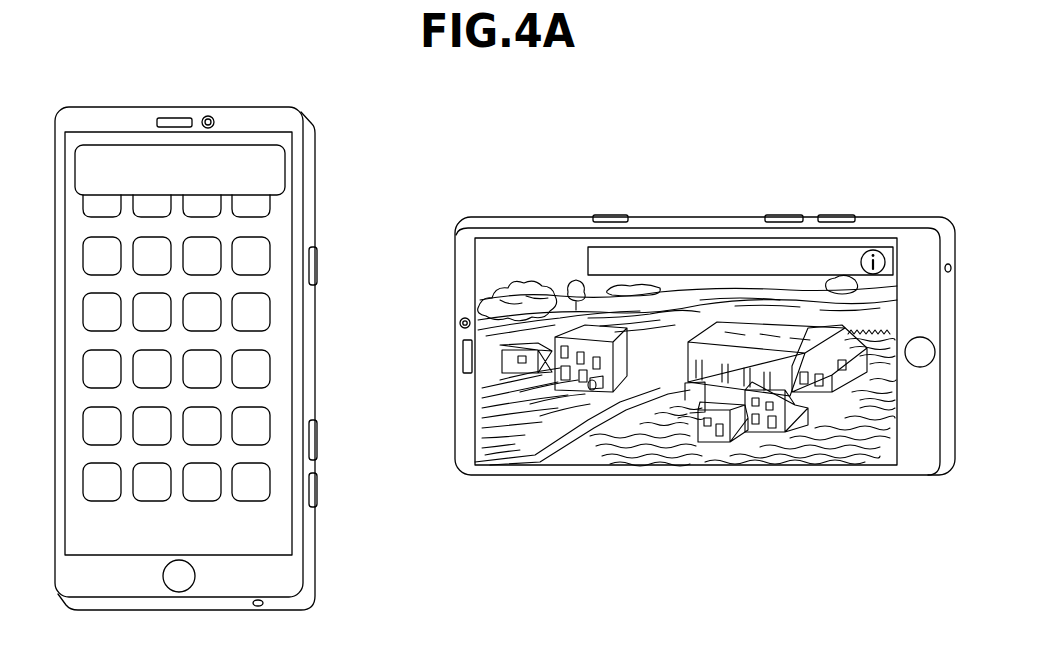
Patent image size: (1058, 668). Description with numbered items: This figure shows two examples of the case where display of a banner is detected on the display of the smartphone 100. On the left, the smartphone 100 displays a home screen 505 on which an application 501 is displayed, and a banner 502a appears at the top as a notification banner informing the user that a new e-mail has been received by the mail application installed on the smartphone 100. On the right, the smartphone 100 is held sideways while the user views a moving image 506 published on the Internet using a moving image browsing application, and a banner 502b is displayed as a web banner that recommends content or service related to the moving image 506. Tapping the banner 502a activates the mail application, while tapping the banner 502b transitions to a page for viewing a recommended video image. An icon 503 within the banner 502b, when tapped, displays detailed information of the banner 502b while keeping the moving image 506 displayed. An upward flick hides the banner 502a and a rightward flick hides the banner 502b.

The smartphone 100 is at (279, 81).
The application 501 is at (258, 313).
The banner 502a is at (268, 158).
The banner 502b is at (673, 246).
The icon 503 is at (882, 250).
The home screen 505 is at (258, 533).
The moving image 506 is at (583, 455).